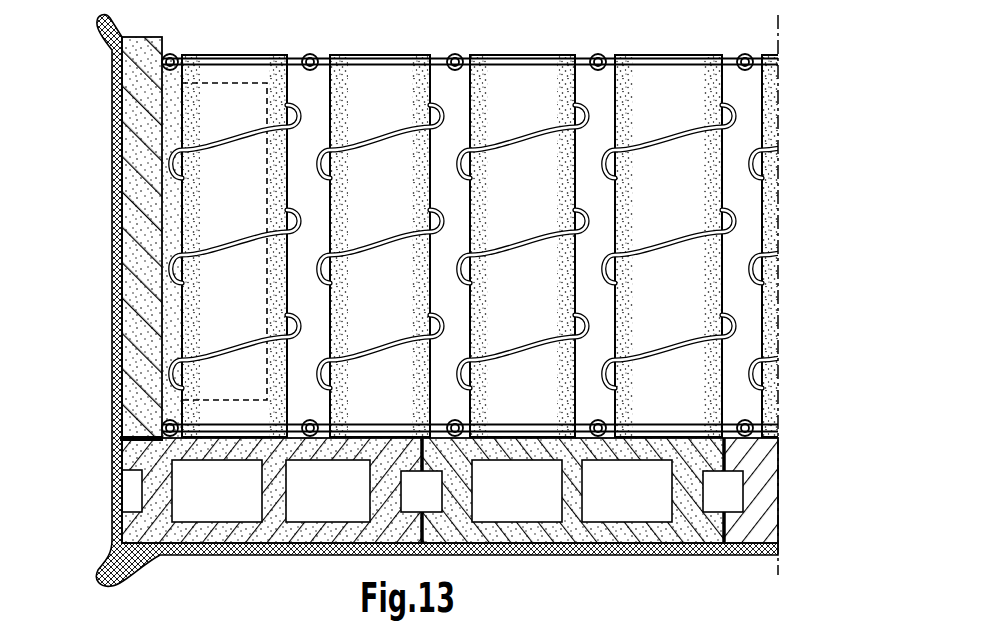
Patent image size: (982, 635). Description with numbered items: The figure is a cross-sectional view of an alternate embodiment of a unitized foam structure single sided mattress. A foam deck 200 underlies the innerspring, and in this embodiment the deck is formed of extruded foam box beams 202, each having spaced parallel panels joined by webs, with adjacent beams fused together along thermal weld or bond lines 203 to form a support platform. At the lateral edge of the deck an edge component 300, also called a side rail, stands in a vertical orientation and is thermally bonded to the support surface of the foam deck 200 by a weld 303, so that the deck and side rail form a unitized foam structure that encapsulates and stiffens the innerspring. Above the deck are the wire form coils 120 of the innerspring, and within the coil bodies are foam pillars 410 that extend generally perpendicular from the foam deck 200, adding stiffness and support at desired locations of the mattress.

The edge component 300 is at (110, 203).
The weld 303 is at (119, 442).
The foam deck 200 is at (450, 530).
The box beam 202 is at (232, 533).
The thermal weld or bond line 203 is at (432, 507).
The wire form coil 120 is at (728, 116).
The foam pillar 410 is at (688, 195).